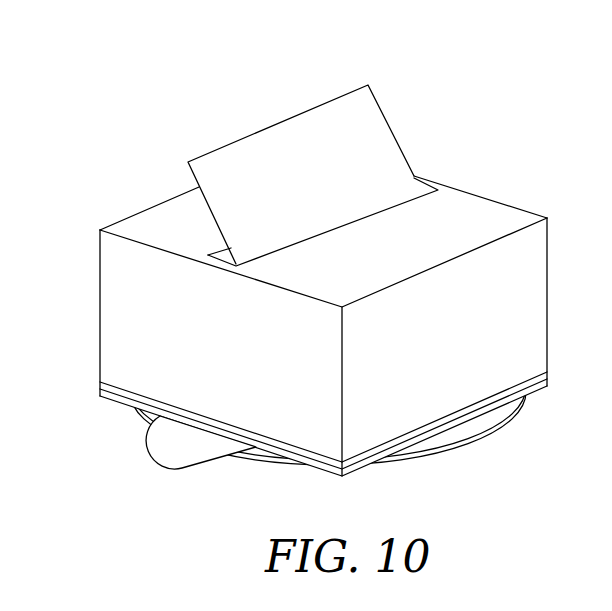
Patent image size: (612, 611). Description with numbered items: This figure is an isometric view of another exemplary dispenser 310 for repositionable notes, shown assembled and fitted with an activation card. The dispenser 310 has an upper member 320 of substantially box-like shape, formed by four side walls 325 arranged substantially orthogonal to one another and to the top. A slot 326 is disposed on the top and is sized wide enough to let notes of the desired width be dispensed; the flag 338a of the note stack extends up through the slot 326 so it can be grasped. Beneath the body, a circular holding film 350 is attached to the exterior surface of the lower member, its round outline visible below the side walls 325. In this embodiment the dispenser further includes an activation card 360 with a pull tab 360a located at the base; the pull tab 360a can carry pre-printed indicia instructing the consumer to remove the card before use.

The dispenser 310 is at (447, 71).
The upper member 320 is at (490, 217).
The side walls 325 is at (469, 349).
The slot 326 is at (222, 252).
The flag 338a is at (343, 187).
The holding film 350 is at (497, 422).
The activation card 360 is at (112, 398).
The pull tab 360a is at (162, 442).